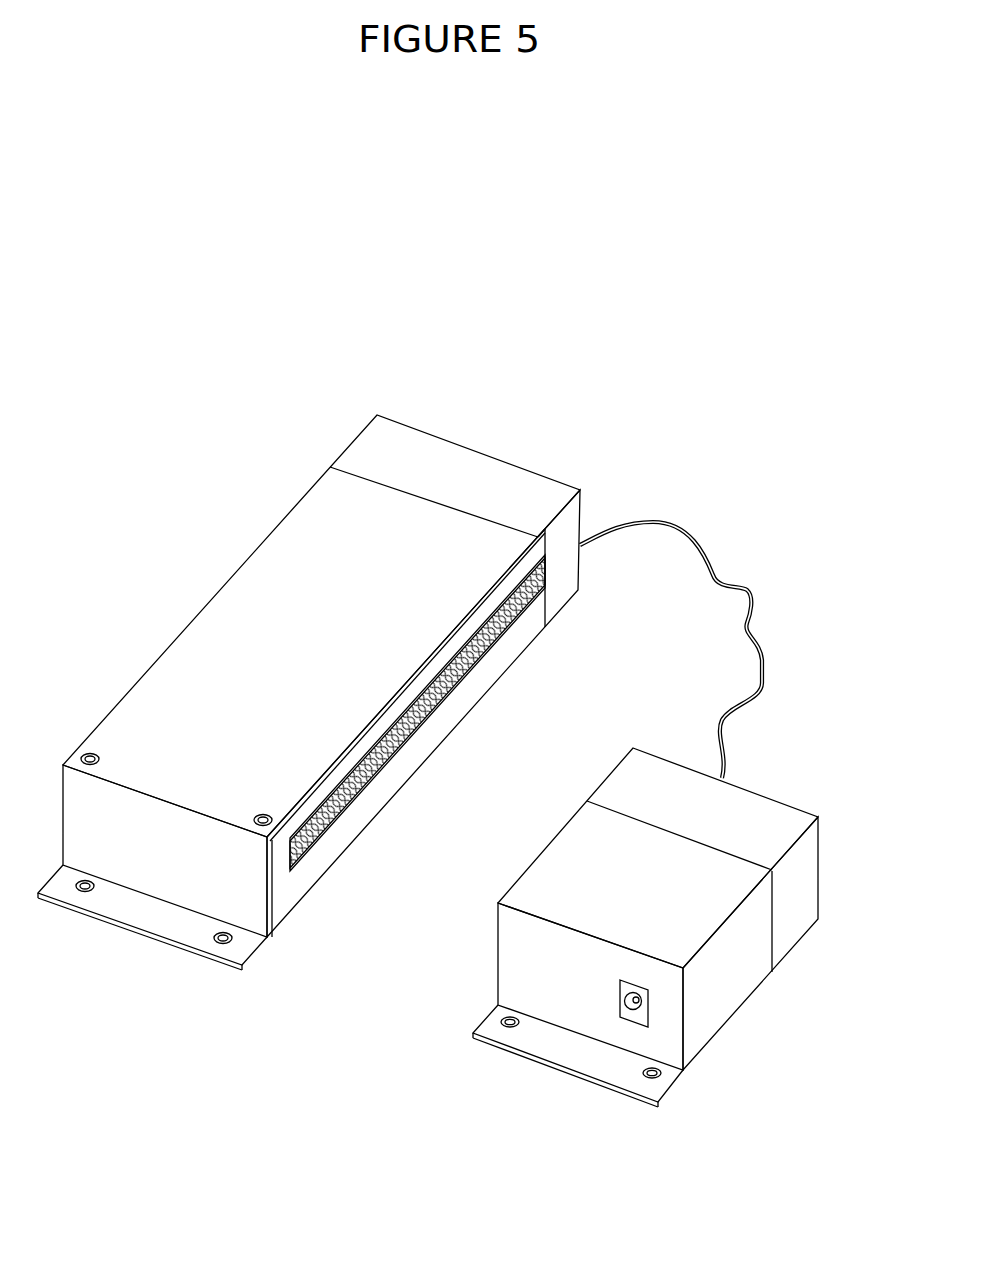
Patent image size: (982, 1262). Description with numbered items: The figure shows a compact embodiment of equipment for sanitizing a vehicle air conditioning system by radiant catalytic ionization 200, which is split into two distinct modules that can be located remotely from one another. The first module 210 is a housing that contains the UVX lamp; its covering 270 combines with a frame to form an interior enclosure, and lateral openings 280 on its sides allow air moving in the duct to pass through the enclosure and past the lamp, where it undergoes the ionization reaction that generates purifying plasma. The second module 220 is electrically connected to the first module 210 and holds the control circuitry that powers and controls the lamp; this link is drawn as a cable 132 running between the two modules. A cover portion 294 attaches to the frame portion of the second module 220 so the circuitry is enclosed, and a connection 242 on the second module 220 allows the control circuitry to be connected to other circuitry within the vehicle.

The equipment for sanitizing the air conditioning system of vehicles by means of rad 200 is at (673, 383).
The first module 210 is at (183, 553).
The covering 270 is at (297, 548).
The lateral openings 280 is at (337, 815).
The power cable 132 is at (703, 548).
The second module 220 is at (567, 795).
The cover portion 294 is at (558, 865).
The connection 242 is at (628, 1006).